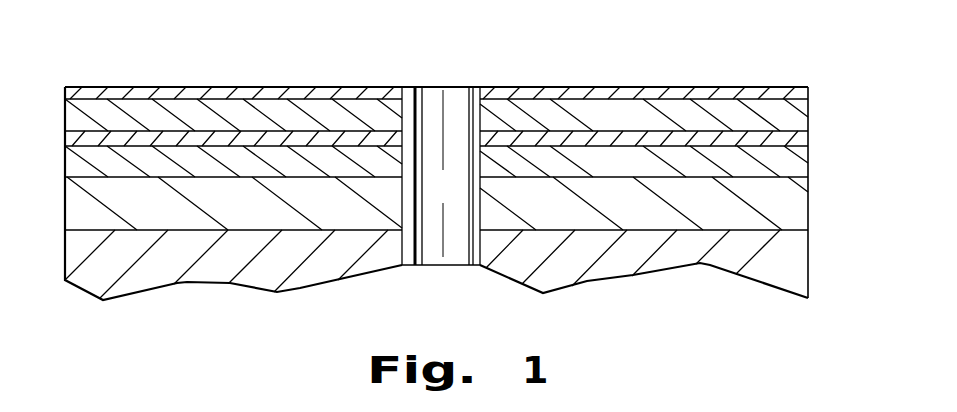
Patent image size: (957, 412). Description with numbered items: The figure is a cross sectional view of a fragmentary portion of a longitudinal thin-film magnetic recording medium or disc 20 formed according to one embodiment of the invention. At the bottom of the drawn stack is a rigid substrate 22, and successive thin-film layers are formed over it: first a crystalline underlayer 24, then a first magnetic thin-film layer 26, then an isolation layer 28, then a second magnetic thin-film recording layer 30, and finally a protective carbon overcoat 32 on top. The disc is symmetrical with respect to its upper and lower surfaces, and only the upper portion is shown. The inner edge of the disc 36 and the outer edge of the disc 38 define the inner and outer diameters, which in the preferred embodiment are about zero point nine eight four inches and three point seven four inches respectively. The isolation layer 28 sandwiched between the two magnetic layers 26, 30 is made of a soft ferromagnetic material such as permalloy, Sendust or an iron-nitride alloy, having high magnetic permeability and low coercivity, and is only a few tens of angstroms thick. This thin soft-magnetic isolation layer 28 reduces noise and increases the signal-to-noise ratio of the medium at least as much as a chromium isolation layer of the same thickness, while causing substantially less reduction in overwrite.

The disc 20 is at (450, 168).
The rigid substrate 22 is at (728, 258).
The crystalline underlayer 24 is at (727, 213).
The first magnetic (M1) thin-film layer 26 is at (790, 158).
The isolation layer 28 is at (808, 140).
The second magnetic (M2) thin-film recording layer 30 is at (802, 115).
The protective carbon overcoat 32 is at (528, 85).
The inner edge of the disc 36 is at (473, 258).
The outer edge of the disc 38 is at (808, 260).